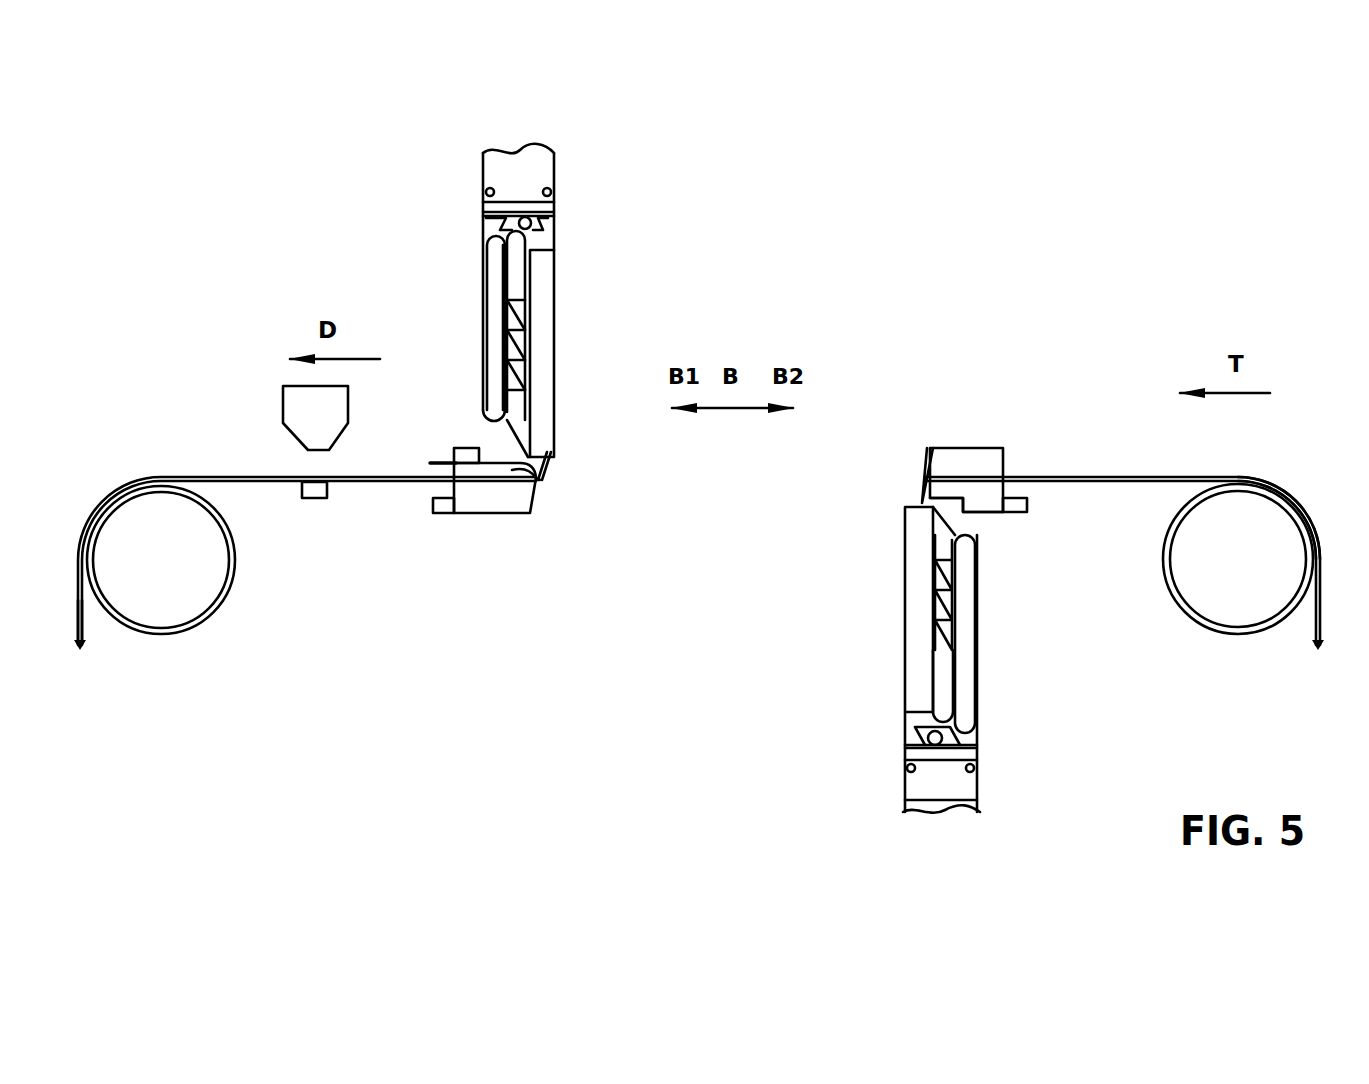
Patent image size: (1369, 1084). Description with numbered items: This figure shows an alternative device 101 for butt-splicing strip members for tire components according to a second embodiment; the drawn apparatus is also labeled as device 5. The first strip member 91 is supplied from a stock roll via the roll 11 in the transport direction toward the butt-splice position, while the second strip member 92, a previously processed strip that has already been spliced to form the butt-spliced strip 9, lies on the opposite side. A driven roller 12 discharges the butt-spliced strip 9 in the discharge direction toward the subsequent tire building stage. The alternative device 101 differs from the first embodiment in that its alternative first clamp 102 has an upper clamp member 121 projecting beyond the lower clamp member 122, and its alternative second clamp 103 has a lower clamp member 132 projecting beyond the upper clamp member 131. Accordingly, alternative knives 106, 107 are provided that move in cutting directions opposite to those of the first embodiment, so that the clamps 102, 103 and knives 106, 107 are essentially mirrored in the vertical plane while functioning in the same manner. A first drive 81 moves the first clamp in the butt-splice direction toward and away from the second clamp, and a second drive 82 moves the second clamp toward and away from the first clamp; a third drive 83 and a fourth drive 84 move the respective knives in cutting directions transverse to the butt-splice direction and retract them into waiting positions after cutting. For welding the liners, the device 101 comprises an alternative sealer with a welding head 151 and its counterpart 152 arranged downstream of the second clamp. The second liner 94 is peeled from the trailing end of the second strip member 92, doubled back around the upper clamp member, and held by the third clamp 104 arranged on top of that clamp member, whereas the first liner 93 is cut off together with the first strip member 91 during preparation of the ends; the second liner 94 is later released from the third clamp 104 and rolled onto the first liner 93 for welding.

The device 5 is at (252, 375).
The butt-spliced strip 9 is at (84, 632).
The roll 11 is at (1222, 604).
The driven roller 12 is at (158, 598).
The first drive 81 is at (1020, 506).
The second drive 82 is at (445, 505).
The third drive 83 is at (912, 792).
The fourth drive 84 is at (530, 176).
The first strip member 91 is at (1140, 488).
The second strip member 92 is at (222, 476).
The first liner 93 is at (1054, 475).
The second liner 94 is at (436, 465).
The alternative device 101 is at (291, 246).
The alternative first clamp 102 is at (952, 397).
The alternative second clamp 103 is at (468, 568).
The third clamp 104 is at (461, 448).
The alternative knife 106 is at (921, 497).
The alternative knife 107 is at (552, 472).
The upper clamp member 121 is at (934, 452).
The lower clamp member 122 is at (990, 502).
The upper clamp member 131 is at (540, 468).
The lower clamp member 132 is at (515, 492).
The welding head 151 is at (340, 414).
The counterpart 152 is at (314, 499).